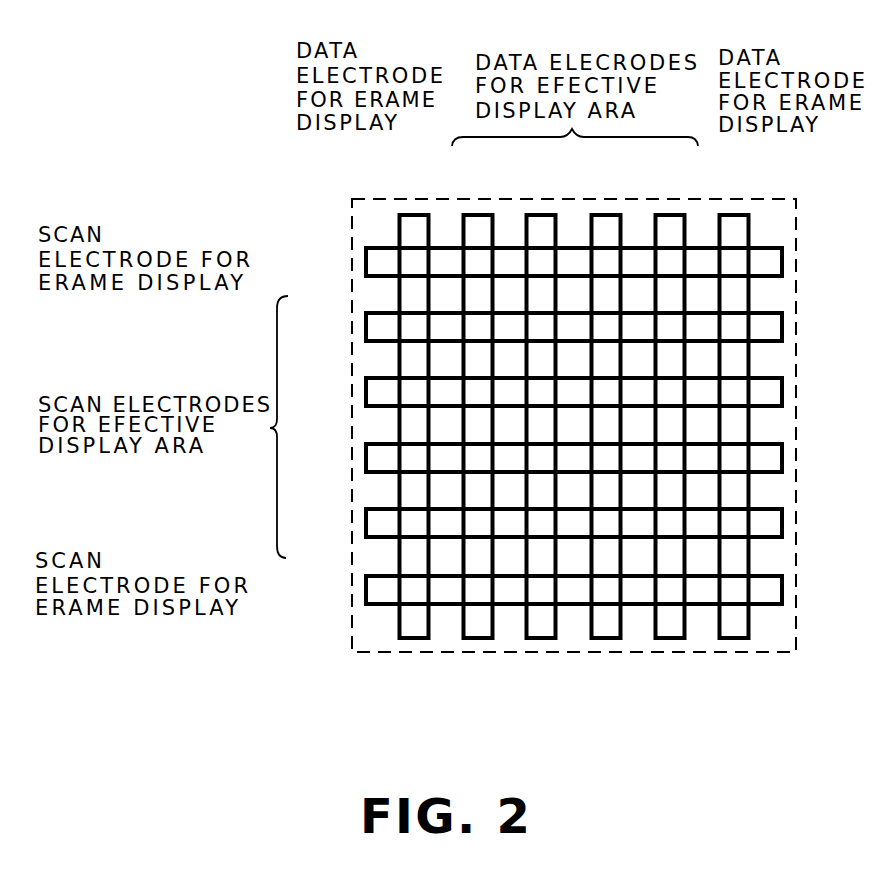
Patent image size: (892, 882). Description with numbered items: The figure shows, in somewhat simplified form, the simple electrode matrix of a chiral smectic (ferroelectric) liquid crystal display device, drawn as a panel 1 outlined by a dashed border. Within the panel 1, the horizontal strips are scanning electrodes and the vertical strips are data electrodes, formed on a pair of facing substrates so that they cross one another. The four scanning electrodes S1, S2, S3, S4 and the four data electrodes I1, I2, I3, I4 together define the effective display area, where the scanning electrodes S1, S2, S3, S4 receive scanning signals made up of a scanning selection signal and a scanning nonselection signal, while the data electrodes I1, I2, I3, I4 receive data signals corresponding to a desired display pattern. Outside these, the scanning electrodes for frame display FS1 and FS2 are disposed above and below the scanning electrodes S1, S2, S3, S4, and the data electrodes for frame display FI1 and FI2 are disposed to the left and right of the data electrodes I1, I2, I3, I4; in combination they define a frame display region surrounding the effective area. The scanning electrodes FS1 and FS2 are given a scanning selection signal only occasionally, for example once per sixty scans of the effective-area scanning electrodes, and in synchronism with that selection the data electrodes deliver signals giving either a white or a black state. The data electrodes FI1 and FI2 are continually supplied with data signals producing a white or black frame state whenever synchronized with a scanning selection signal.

The display panel (effective display area with frame electrodes) 1 is at (510, 654).
The data electrode for frame display FI1 is at (414, 213).
The data electrode I1 is at (478, 213).
The data electrode I2 is at (541, 213).
The data electrode I3 is at (606, 213).
The data electrode I4 is at (670, 213).
The data electrode for frame display FI2 is at (734, 213).
The scanning electrode for frame display FS1 is at (364, 262).
The scanning electrode S1 is at (364, 327).
The scanning electrode S2 is at (364, 392).
The scanning electrode S3 is at (364, 458).
The scanning electrode S4 is at (364, 523).
The scanning electrode for frame display FS2 is at (364, 590).